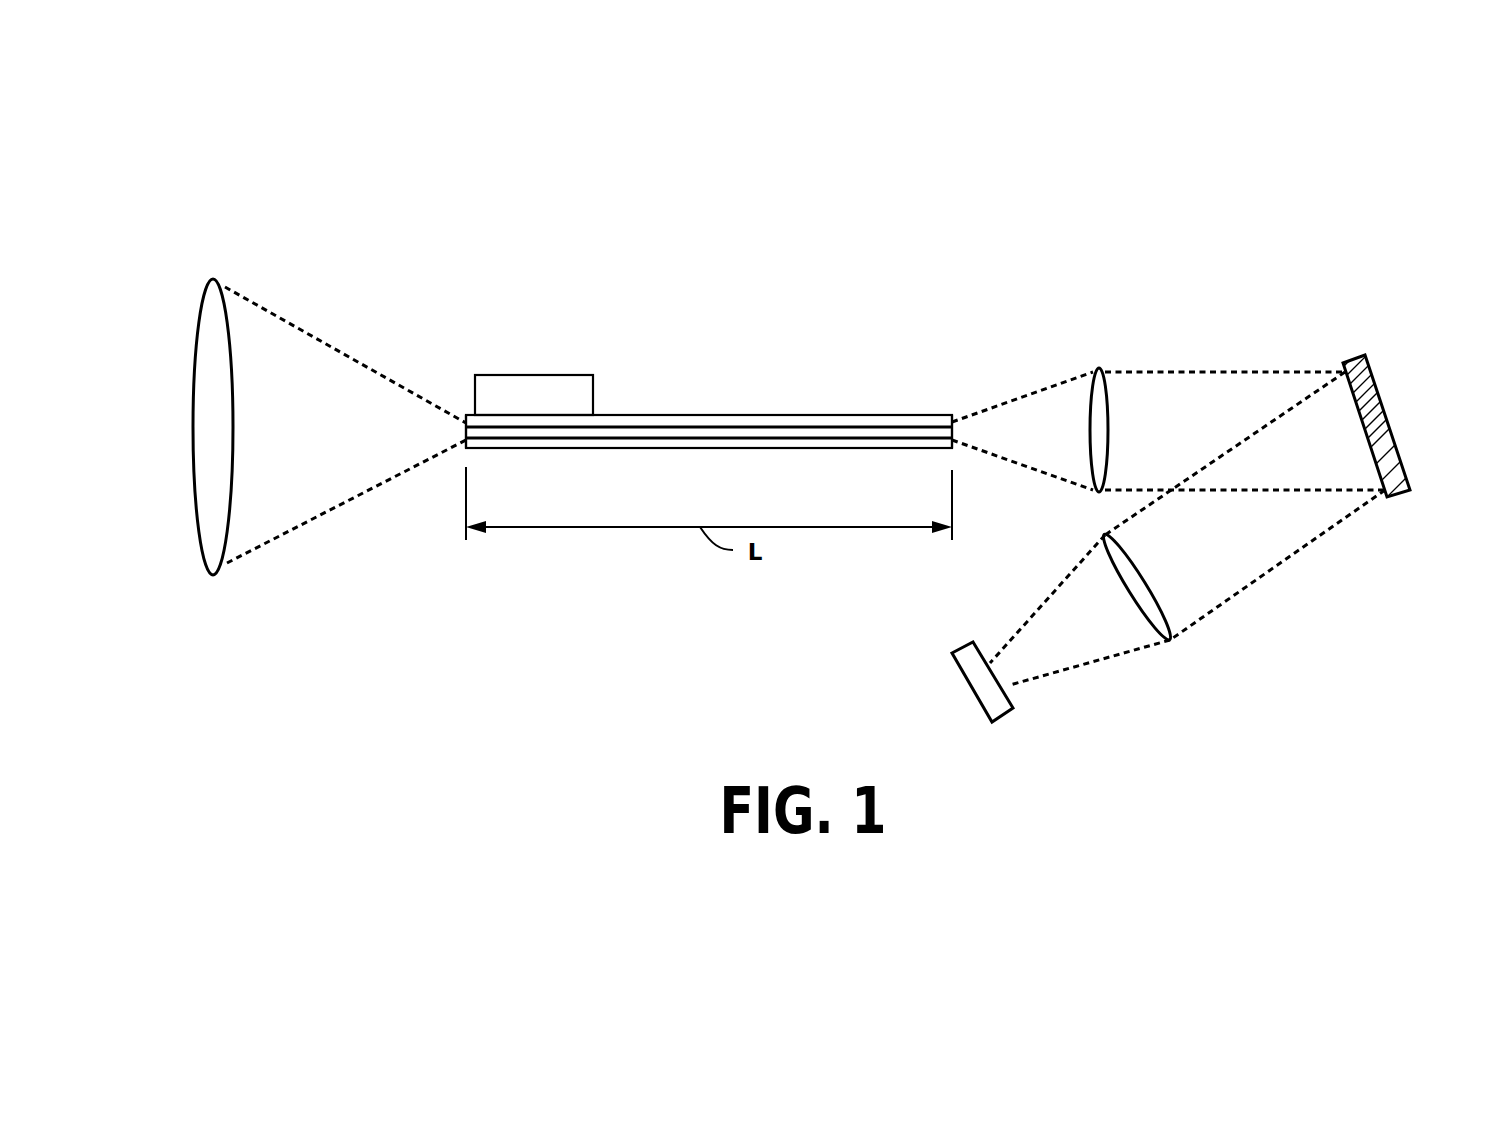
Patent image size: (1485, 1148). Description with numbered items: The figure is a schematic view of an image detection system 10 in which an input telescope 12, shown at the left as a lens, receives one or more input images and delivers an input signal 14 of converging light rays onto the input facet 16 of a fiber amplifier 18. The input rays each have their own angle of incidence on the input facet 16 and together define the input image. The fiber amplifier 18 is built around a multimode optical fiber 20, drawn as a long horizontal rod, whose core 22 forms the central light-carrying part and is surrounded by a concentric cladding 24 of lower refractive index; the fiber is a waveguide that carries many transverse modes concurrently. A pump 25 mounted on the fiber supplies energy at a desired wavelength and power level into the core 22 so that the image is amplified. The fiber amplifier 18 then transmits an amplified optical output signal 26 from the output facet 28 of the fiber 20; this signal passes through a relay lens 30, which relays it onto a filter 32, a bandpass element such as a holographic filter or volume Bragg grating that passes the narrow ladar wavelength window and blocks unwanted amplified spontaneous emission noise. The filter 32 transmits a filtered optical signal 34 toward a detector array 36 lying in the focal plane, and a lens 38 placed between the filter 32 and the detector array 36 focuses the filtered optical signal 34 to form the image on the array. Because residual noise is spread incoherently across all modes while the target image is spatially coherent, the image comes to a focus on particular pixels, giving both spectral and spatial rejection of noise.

The image detection system 10 is at (1177, 237).
The input telescope 12 is at (197, 390).
The input signal 14 is at (333, 345).
The input facet 16 is at (462, 428).
The fiber amplifier 18 is at (797, 325).
The multimode optical fiber 20 is at (840, 400).
The core 22 is at (636, 437).
The cladding 24 is at (770, 448).
The pump 25 is at (535, 375).
The amplified optical output signal 26 is at (1012, 403).
The output facet 28 is at (960, 432).
The relay lens 30 is at (1099, 368).
The filter 32 is at (1388, 420).
The filtered optical signal 34 is at (1298, 548).
The detector array 36 is at (968, 688).
The lens 38 is at (1172, 640).